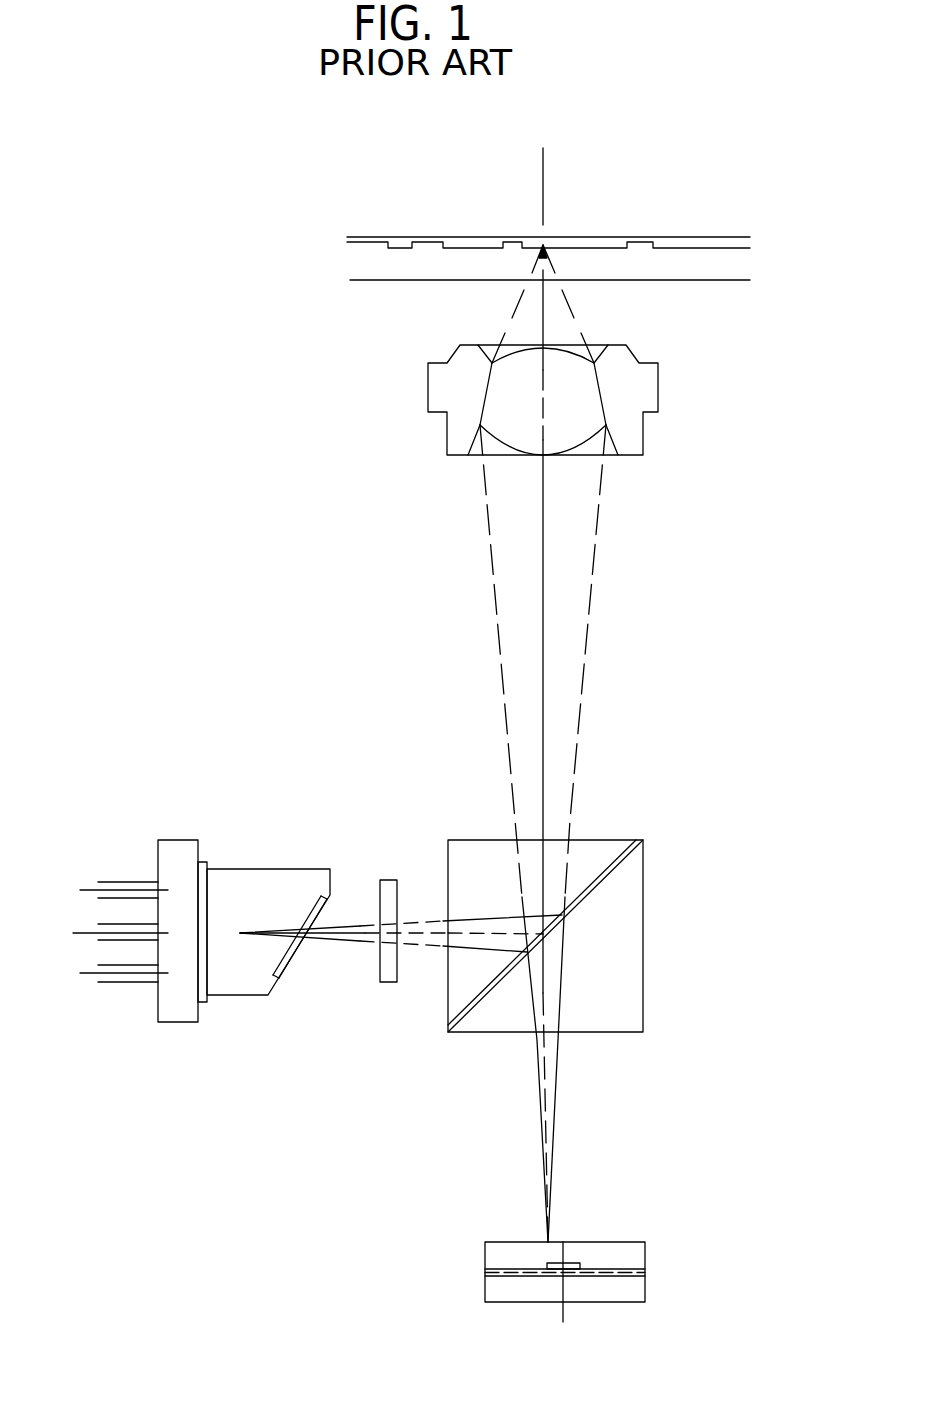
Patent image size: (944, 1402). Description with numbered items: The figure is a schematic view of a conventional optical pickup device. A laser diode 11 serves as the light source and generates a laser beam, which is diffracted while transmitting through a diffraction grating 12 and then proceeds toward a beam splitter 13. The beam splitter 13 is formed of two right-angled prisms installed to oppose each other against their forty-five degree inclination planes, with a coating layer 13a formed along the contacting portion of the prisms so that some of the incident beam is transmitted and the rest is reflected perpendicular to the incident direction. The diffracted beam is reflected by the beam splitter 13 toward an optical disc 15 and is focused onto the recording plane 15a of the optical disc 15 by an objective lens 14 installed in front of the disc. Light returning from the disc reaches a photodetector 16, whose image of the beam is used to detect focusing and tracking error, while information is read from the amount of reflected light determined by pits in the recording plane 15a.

The laser diode 11 is at (250, 878).
The diffraction grating 12 is at (390, 888).
The beam splitter 13 is at (645, 893).
The coating layer 13a is at (618, 862).
The objective lens 14 is at (437, 387).
The optical disc 15 is at (380, 260).
The recording plane 15a is at (427, 243).
The photodetector 16 is at (618, 1258).